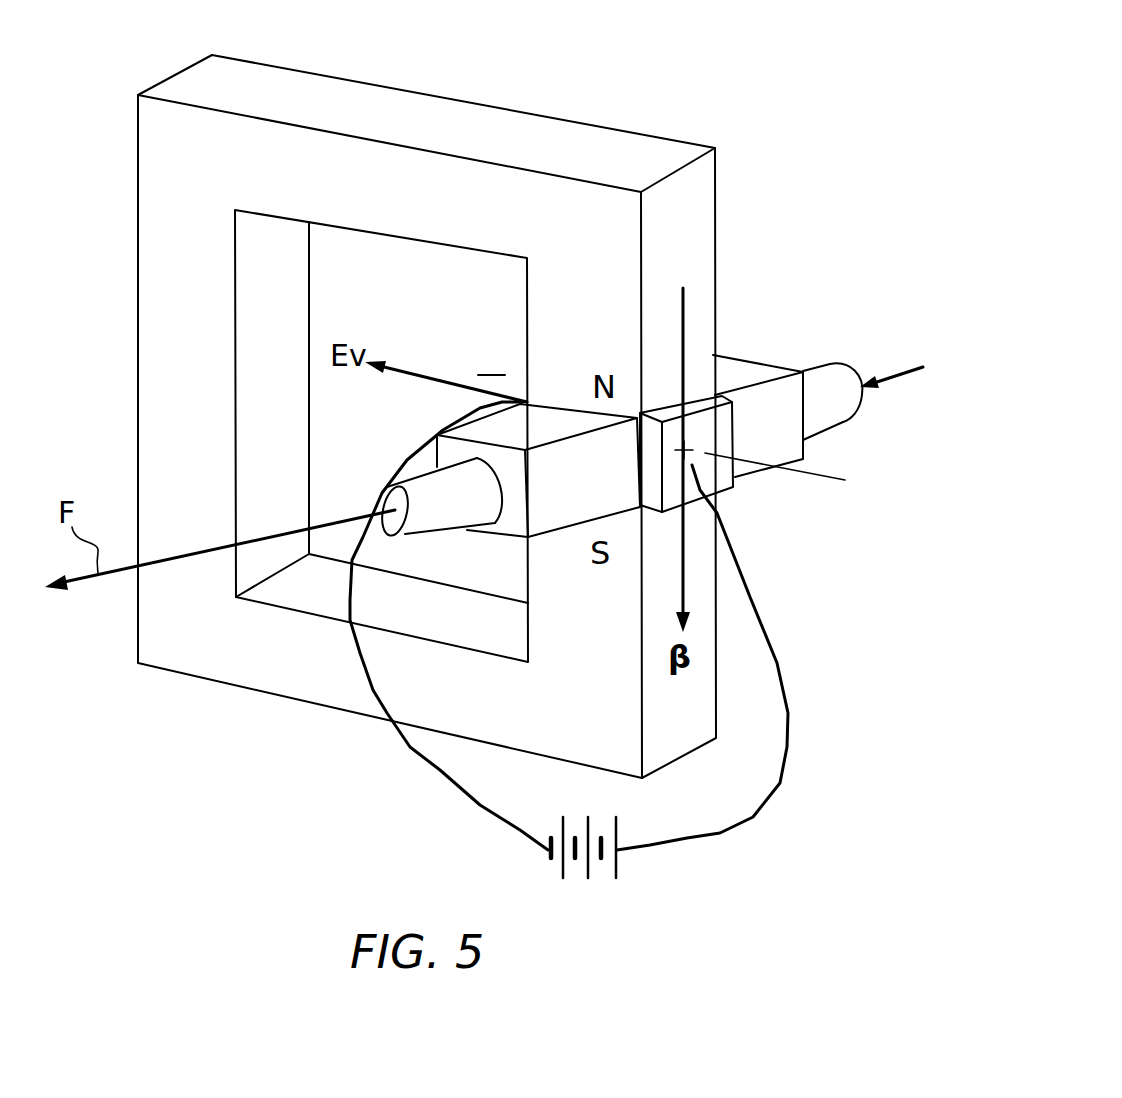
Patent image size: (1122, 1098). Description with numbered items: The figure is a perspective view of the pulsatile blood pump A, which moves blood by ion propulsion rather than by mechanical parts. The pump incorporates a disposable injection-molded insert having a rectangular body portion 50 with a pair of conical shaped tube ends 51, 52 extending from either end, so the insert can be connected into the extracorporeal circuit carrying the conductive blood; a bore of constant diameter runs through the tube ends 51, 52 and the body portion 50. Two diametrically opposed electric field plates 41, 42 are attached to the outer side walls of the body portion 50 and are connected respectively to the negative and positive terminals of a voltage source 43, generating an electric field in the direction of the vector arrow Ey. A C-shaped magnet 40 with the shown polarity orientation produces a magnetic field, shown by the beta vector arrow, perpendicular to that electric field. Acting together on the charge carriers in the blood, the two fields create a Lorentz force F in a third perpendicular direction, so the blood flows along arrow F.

The "C" shaped magnet 40 is at (615, 152).
The electric field plate 41 is at (525, 402).
The electric field plate 42 is at (717, 485).
The voltage source 43 is at (616, 878).
The rectangular body portion 50 is at (513, 522).
The conical shaped tube end 51 is at (822, 373).
The conical shaped tube end 52 is at (402, 487).
The pulsatile blood pump A is at (790, 243).